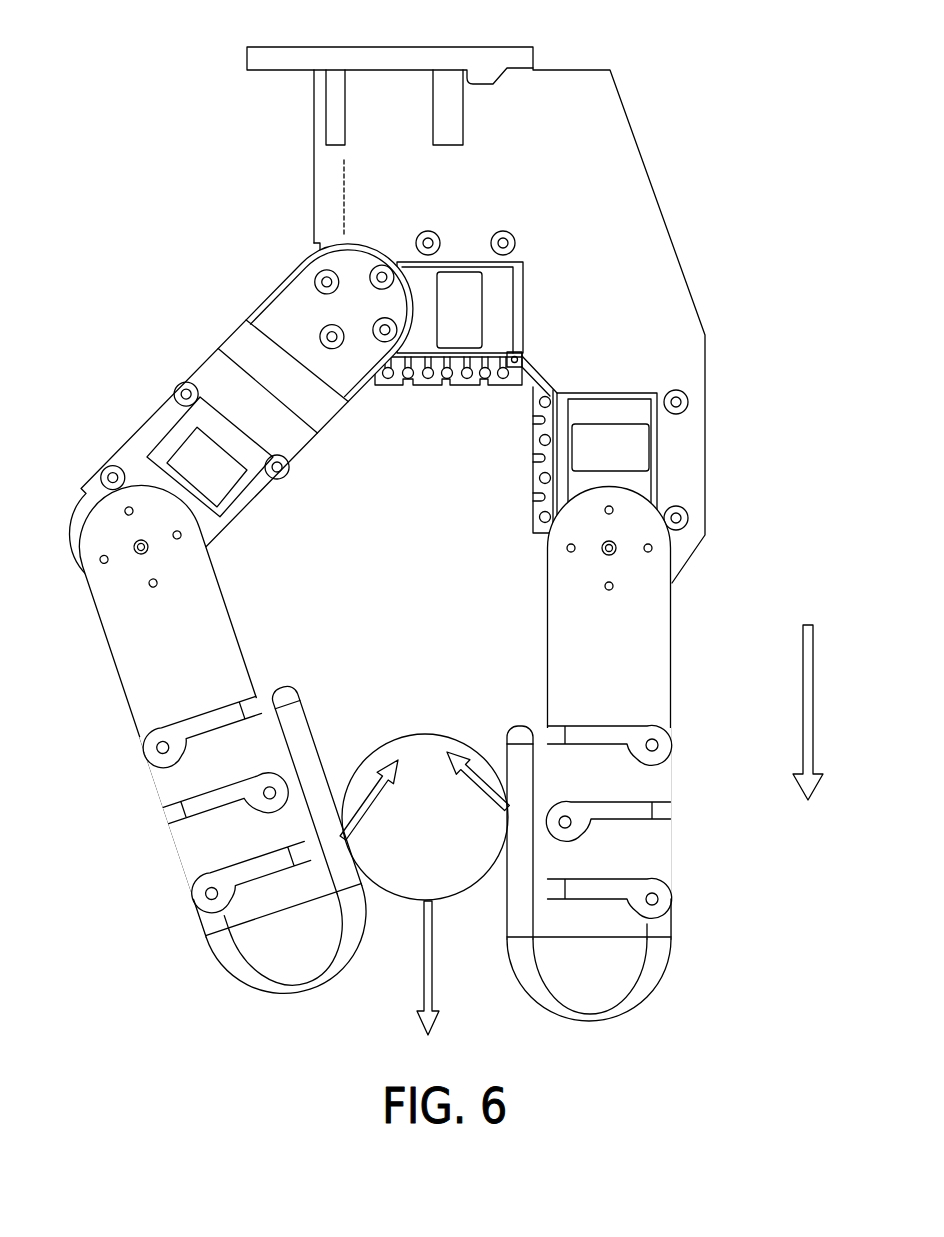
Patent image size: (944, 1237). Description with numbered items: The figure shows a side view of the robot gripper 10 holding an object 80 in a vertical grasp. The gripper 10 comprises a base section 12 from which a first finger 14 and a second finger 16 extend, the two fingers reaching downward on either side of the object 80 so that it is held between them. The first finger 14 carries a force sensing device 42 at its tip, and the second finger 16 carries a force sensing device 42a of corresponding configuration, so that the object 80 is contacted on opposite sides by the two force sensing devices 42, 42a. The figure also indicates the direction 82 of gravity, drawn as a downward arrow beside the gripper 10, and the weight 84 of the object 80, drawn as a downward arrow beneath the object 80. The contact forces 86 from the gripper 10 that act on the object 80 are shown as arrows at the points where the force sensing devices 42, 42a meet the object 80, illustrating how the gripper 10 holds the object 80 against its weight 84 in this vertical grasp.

The robot gripper 10 is at (705, 45).
The base section 12 is at (650, 216).
The first finger 14 is at (695, 607).
The second finger 16 is at (103, 420).
The force sensing device 42 is at (687, 752).
The force sensing device 42a is at (246, 851).
The object 80 is at (425, 734).
The direction of gravity 82 is at (815, 660).
The weight of the object 84 is at (433, 975).
The contact forces 86 is at (373, 805).